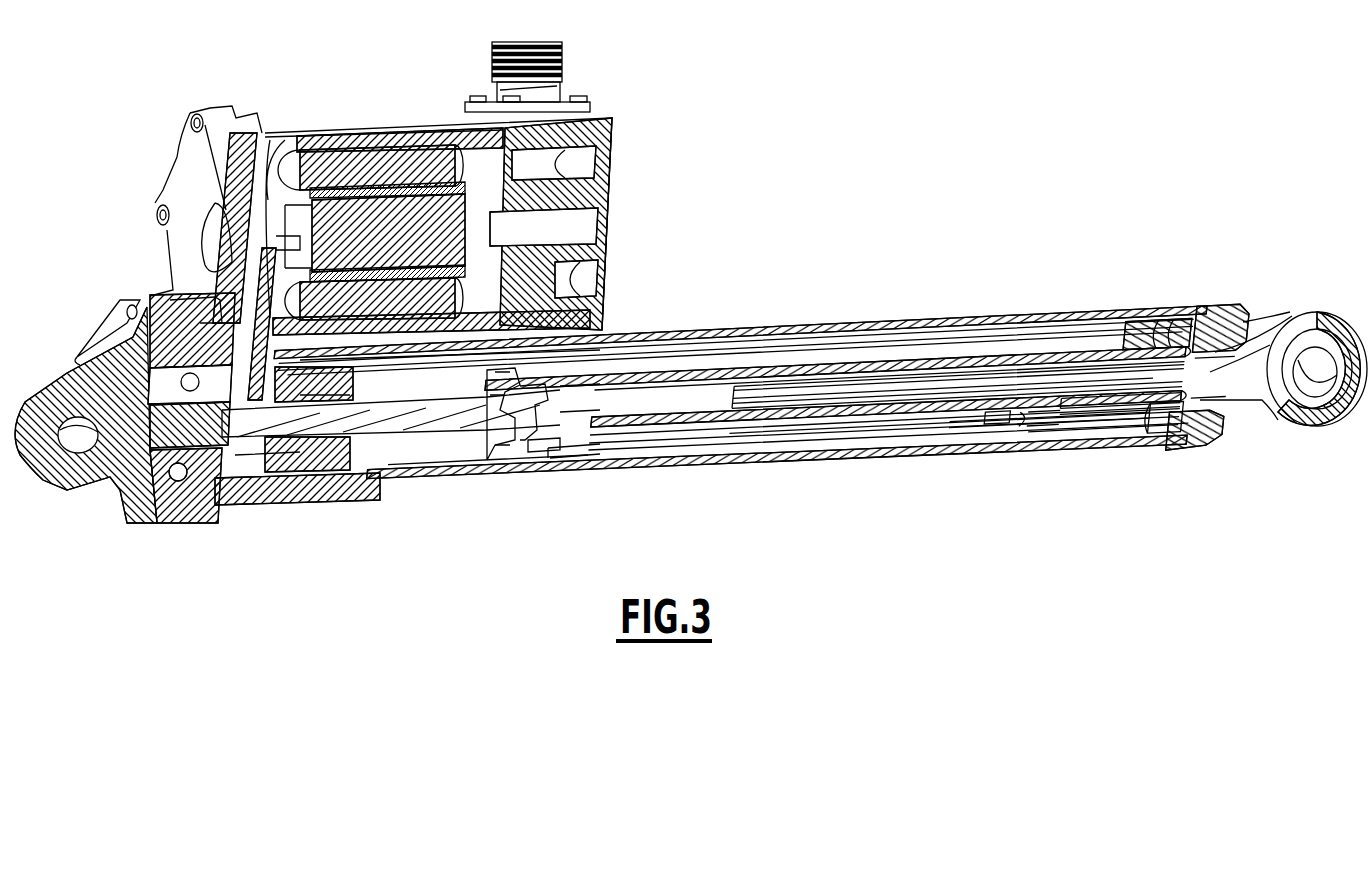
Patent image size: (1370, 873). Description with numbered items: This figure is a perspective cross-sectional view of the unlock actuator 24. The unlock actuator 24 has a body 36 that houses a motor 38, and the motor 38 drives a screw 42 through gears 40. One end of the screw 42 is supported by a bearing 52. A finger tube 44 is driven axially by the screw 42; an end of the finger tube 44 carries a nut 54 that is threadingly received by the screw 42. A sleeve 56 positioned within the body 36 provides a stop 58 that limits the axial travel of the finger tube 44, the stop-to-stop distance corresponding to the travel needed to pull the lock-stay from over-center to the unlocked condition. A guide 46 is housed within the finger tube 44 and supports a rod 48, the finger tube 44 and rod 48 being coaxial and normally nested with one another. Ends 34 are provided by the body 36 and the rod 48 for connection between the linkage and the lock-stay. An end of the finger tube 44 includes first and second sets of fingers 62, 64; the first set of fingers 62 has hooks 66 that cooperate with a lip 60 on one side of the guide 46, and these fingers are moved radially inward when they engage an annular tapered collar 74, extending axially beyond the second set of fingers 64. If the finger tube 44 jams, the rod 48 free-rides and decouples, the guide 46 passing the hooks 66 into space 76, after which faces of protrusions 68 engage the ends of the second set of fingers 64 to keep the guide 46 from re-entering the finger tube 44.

The unlock actuator 24 is at (761, 345).
The ends 34 is at (76, 442).
The body 36 is at (704, 333).
The motor 38 is at (407, 150).
The gears 40 is at (238, 308).
The screw 42 is at (390, 430).
The finger tube 44 is at (762, 340).
The guide 46 is at (540, 450).
The rod 48 is at (866, 410).
The bearing 52 is at (182, 525).
The nut 54 is at (318, 465).
The sleeve 56 is at (1072, 450).
The stop 58 is at (600, 271).
The lip 60 is at (583, 456).
The first set of fingers 62 is at (995, 440).
The second set of fingers 64 is at (972, 428).
The hooks 66 is at (1032, 440).
The protrusions 68 is at (535, 450).
The annular tapered collar 74 is at (1150, 420).
The space 76 is at (1094, 407).